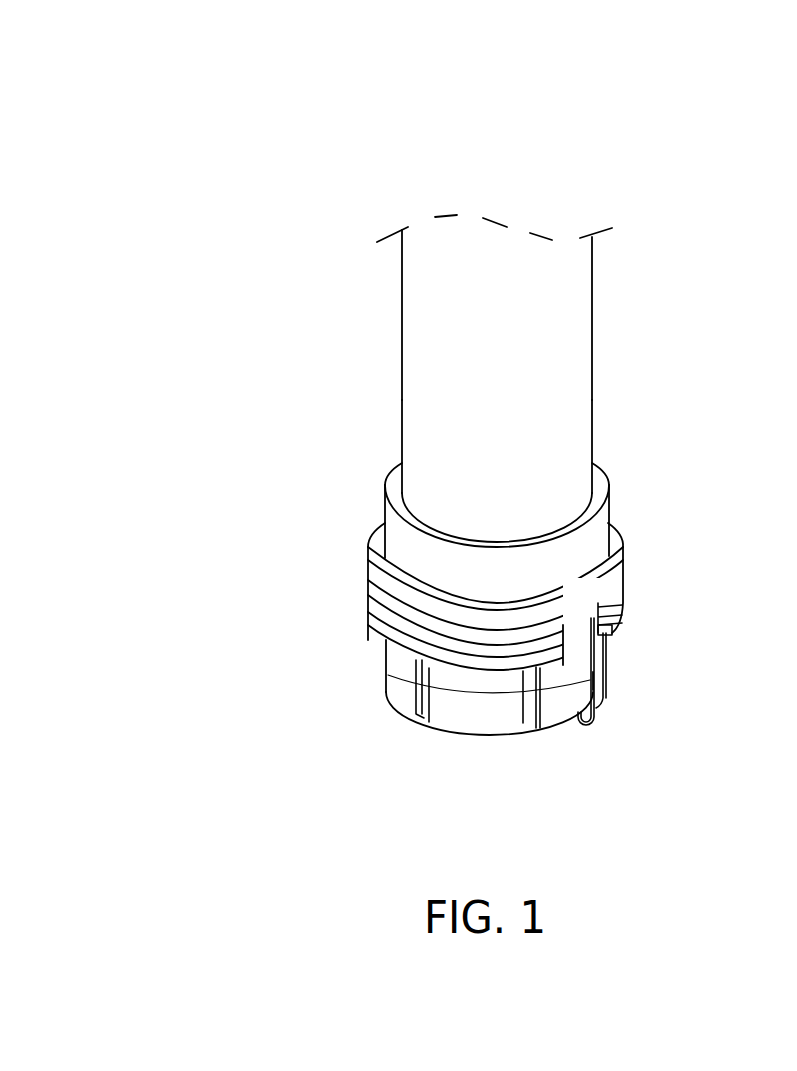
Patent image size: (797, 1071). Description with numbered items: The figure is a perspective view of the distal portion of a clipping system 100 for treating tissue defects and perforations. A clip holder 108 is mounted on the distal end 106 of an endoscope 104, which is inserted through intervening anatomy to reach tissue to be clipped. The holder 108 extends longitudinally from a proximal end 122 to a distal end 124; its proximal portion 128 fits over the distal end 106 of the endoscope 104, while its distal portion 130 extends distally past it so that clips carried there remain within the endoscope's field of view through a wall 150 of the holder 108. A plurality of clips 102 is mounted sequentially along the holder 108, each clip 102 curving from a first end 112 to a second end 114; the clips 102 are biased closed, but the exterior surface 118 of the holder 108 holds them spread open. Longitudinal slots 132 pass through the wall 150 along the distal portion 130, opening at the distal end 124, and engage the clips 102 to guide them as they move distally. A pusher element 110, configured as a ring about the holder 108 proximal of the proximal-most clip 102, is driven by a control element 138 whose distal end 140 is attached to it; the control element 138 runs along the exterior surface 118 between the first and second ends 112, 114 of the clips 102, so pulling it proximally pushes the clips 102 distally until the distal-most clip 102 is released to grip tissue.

The clipping system 100 is at (351, 256).
The clips 102 is at (373, 628).
The endoscope 104 is at (585, 313).
The distal end 106 is at (410, 467).
The clip holder 108 is at (636, 494).
The pusher element 110 is at (624, 553).
The first end 112 is at (553, 658).
The second end 114 is at (622, 633).
The exterior surface 118 is at (607, 535).
The proximal end 122 is at (606, 493).
The distal end 124 is at (395, 703).
The proximal portion 128 is at (390, 528).
The distal portion 130 is at (396, 683).
The longitudinal slots 132 is at (527, 727).
The control element 138 is at (596, 698).
The distal end 140 is at (614, 612).
The wall 150 is at (596, 472).